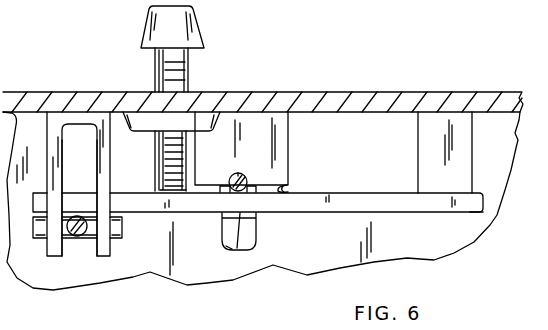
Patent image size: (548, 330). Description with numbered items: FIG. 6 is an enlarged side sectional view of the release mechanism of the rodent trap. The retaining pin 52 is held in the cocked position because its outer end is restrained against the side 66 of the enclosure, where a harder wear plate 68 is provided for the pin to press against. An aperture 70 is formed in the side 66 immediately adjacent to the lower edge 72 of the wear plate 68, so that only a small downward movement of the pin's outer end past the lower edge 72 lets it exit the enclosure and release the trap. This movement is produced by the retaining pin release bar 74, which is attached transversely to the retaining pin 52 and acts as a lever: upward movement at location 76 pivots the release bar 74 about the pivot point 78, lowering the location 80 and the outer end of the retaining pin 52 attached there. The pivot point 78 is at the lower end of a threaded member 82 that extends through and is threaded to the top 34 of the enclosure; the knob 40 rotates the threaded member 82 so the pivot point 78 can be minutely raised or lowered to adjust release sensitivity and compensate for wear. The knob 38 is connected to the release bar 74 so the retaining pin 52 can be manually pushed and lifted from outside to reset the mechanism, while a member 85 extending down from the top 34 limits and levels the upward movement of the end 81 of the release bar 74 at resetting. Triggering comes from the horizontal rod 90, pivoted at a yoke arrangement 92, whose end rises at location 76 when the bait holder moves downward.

The top of the enclosure 34 is at (384, 95).
The knob 38 is at (232, 243).
The knob 40 is at (192, 38).
The retaining pin 52 is at (238, 171).
The side of enclosure 66 is at (289, 263).
The wear plate 68 is at (284, 132).
The aperture 70 is at (256, 225).
The lower edge of wear plate 72 is at (278, 190).
The retaining pin release bar 74 is at (150, 205).
The location on release bar 76 is at (78, 212).
The pivot point 78 is at (173, 190).
The location on release bar 80 is at (243, 197).
The end of the retaining pin release bar 81 is at (474, 210).
The threaded member 82 is at (170, 78).
The member 85 is at (433, 143).
The horizontal rod 90 is at (78, 237).
The yoke arrangement 92 is at (102, 182).